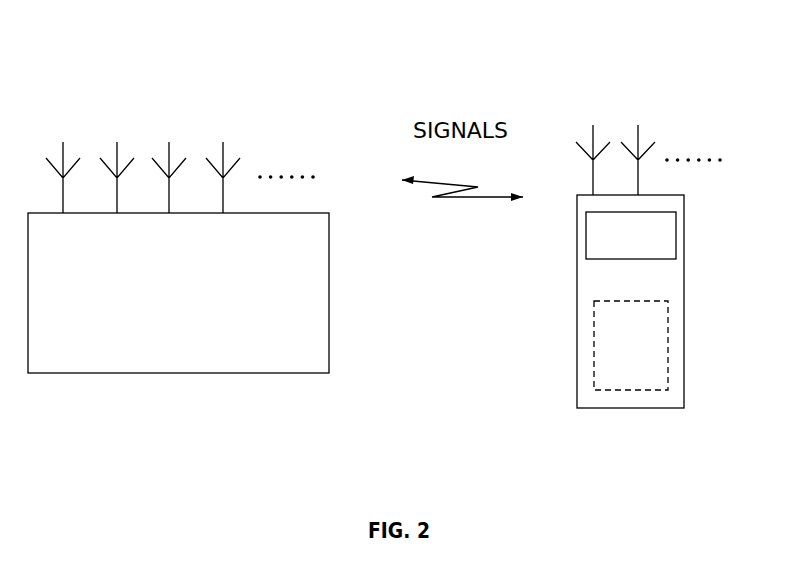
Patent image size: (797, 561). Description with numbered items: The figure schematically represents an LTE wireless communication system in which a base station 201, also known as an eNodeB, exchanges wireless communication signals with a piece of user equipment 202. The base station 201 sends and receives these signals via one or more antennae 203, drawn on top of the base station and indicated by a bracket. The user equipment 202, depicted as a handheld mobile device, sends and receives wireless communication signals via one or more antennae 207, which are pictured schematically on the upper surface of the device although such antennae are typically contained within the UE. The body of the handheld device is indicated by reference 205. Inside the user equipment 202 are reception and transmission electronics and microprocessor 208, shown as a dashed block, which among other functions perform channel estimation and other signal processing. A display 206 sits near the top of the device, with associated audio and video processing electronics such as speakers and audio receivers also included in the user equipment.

The base station 201 is at (329, 300).
The user equipment 202 is at (679, 235).
The antennae 203 is at (383, 123).
The UE body / housing 205 is at (684, 302).
The display 206 is at (676, 238).
The antennae 207 is at (702, 125).
The reception and transmission electronics and microprocessor 208 is at (668, 378).